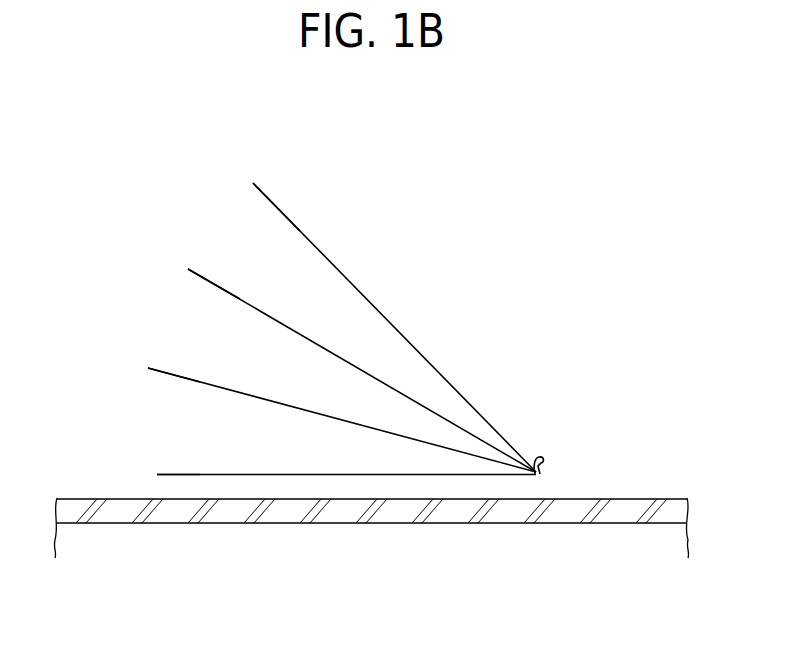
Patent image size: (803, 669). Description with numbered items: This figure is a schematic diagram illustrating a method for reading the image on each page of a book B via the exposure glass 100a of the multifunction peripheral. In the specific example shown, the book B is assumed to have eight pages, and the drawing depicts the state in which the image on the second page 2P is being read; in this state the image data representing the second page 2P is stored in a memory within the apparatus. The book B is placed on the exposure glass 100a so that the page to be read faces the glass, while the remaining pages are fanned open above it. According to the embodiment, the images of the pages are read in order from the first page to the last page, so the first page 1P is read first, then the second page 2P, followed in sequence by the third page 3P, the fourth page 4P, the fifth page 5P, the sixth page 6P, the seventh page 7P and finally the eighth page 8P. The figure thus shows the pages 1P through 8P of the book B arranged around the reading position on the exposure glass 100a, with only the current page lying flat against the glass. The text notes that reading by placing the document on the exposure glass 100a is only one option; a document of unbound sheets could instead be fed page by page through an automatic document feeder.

The first page 1P is at (187, 475).
The second page 2P is at (168, 477).
The third page 3P is at (282, 213).
The fourth page 4P is at (256, 193).
The fifth page 5P is at (230, 293).
The sixth page 6P is at (202, 280).
The seventh page 7P is at (197, 377).
The eighth page 8P is at (170, 375).
The exposure glass 100a is at (582, 501).
The book B is at (470, 312).